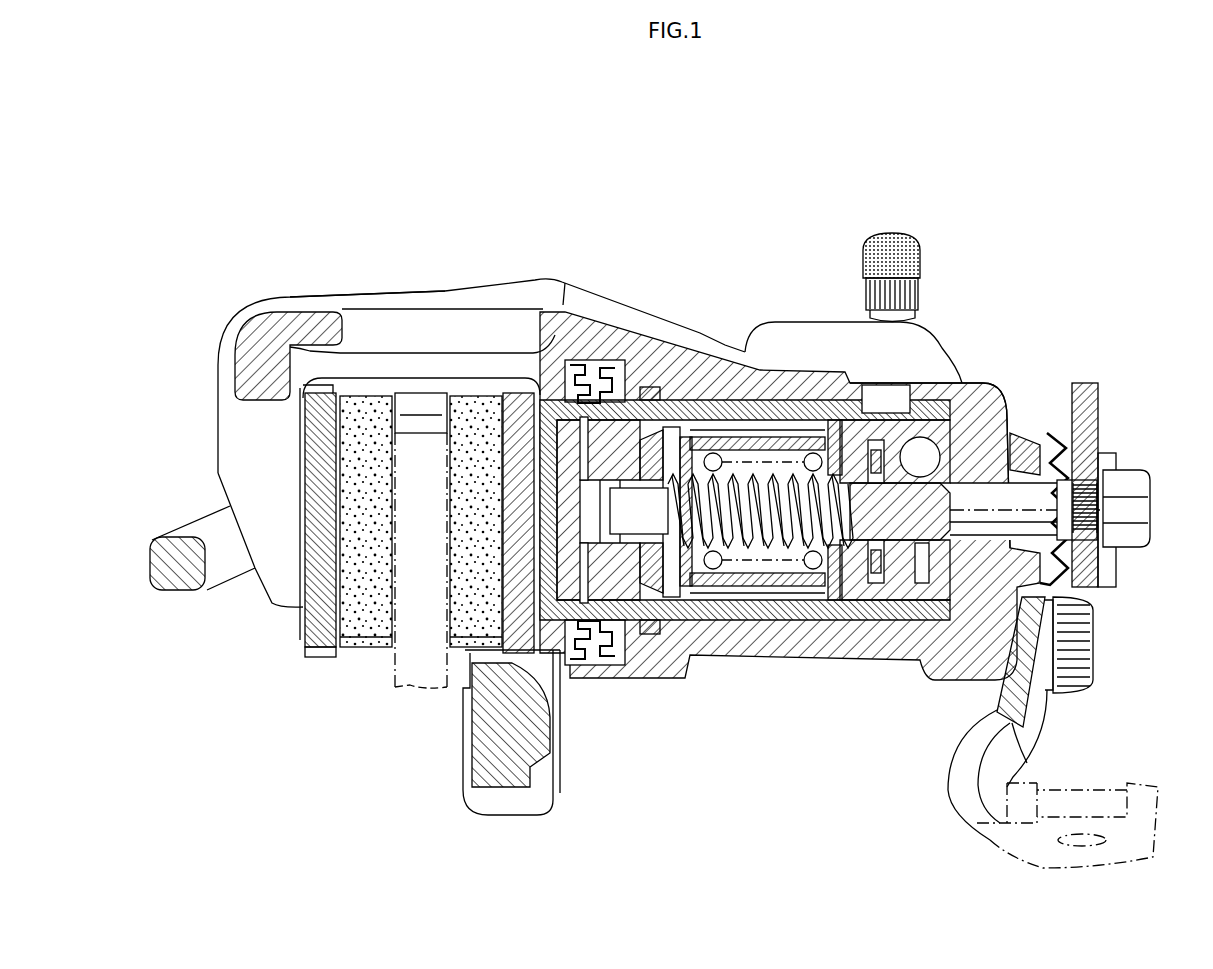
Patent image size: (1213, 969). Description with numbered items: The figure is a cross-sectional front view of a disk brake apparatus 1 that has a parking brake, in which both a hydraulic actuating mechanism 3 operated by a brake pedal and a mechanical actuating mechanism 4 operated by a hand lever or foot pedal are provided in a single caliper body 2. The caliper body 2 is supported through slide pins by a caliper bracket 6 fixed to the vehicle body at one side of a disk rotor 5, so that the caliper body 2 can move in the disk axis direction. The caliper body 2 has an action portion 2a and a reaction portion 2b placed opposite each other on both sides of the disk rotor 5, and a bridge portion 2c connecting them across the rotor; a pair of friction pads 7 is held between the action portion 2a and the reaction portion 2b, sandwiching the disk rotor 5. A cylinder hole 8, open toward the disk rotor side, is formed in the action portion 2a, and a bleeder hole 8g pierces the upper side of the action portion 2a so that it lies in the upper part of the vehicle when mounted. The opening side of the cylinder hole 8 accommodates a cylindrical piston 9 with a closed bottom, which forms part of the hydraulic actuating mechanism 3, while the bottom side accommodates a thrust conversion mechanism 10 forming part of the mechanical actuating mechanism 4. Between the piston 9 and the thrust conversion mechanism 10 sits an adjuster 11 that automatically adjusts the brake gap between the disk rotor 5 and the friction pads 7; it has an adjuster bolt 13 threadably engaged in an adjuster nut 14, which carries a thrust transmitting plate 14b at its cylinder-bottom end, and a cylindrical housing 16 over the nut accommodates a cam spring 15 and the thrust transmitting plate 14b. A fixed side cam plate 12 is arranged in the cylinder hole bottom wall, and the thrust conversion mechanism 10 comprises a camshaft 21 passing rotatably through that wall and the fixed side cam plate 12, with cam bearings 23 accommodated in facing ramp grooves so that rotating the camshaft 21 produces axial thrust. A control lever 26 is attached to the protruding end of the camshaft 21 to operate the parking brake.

The disk brake apparatus 1 is at (678, 193).
The caliper body 2 is at (500, 279).
The action portion 2a is at (987, 397).
The reaction portion 2b is at (232, 475).
The bridge portion 2c is at (432, 312).
The hydraulic actuating mechanism 3 is at (678, 636).
The mechanical actuating mechanism 4 is at (1006, 420).
The disk rotor 5 is at (418, 682).
The caliper bracket 6 is at (540, 727).
The friction pads 7 is at (483, 393).
The cylinder hole 8 is at (723, 580).
The bleeder hole 8g is at (890, 397).
The cylindrical piston 9 is at (625, 620).
The thrust conversion mechanism 10 is at (920, 432).
The adjuster 11 is at (810, 662).
The fixed side cam plate 12 is at (970, 443).
The adjuster bolt 13 is at (767, 530).
The adjuster nut 14 is at (777, 545).
The thrust transmitting plate 14b is at (840, 583).
The cam spring 15 is at (810, 575).
The cylindrical housing 16 is at (781, 417).
The camshaft 21 is at (1105, 487).
The cam bearings 23 is at (922, 485).
The control lever 26 is at (1098, 416).